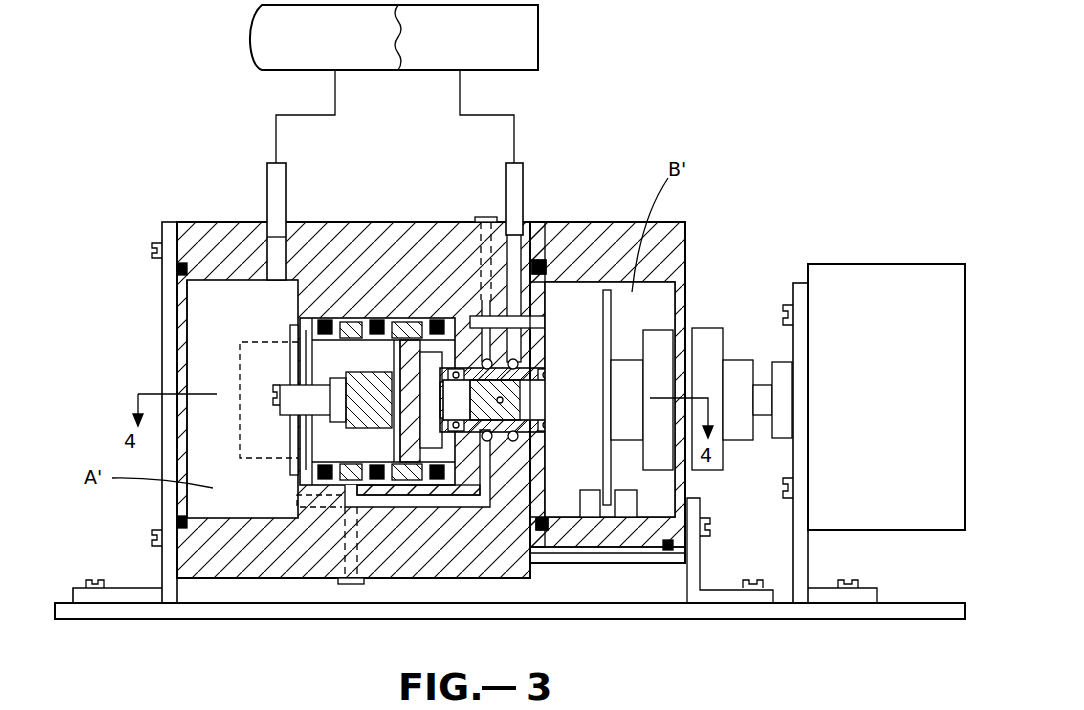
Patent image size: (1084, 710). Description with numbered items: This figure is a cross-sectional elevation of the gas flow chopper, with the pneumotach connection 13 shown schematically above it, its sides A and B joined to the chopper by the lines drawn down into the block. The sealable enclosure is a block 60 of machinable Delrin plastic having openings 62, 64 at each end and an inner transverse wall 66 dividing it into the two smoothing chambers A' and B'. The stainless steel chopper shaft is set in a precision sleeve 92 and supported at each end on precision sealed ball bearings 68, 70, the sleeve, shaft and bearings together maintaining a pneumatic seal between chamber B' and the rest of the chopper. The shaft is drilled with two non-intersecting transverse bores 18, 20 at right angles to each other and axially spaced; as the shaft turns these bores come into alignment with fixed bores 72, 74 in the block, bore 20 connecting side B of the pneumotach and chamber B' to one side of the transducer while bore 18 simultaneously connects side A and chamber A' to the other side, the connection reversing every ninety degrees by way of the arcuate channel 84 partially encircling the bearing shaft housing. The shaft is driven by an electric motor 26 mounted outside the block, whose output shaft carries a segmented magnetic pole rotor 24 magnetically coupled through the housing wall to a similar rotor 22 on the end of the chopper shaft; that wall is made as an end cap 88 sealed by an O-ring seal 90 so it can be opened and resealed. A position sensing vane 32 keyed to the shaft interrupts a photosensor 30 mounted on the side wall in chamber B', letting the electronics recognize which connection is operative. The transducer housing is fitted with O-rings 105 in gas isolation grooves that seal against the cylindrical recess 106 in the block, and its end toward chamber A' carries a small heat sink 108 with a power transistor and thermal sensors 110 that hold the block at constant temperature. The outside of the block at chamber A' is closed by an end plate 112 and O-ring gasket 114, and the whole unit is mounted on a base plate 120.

The electrical power source 13 is at (402, 28).
The transverse bore 18 is at (516, 397).
The transverse bore 20 is at (457, 400).
The magnetic pole rotor 22 is at (653, 342).
The segmented magnetic pole rotor 24 is at (712, 352).
The electric motor 26 is at (826, 433).
The photosensor 30 is at (628, 512).
The position sensing vane 32 is at (602, 330).
The block 60 is at (323, 577).
The opening 62 is at (190, 350).
The opening 64 is at (665, 302).
The inner transverse wall 66 is at (546, 518).
The ball bearing 68 is at (459, 433).
The ball bearing 70 is at (546, 432).
The fixed bore 72 is at (478, 300).
The fixed bore 74 is at (515, 335).
The arcuate channel 84 is at (446, 505).
The end cap 88 is at (672, 248).
The O-ring seal 90 is at (540, 262).
The precision sleeve 92 is at (542, 368).
The O-rings 105 is at (436, 320).
The cylindrical recess 106 is at (300, 335).
The heat sink 108 is at (293, 410).
The thermal sensors 110 is at (246, 380).
The end plate 112 is at (168, 300).
The O-ring gasket 114 is at (180, 262).
The base plate 120 is at (553, 609).